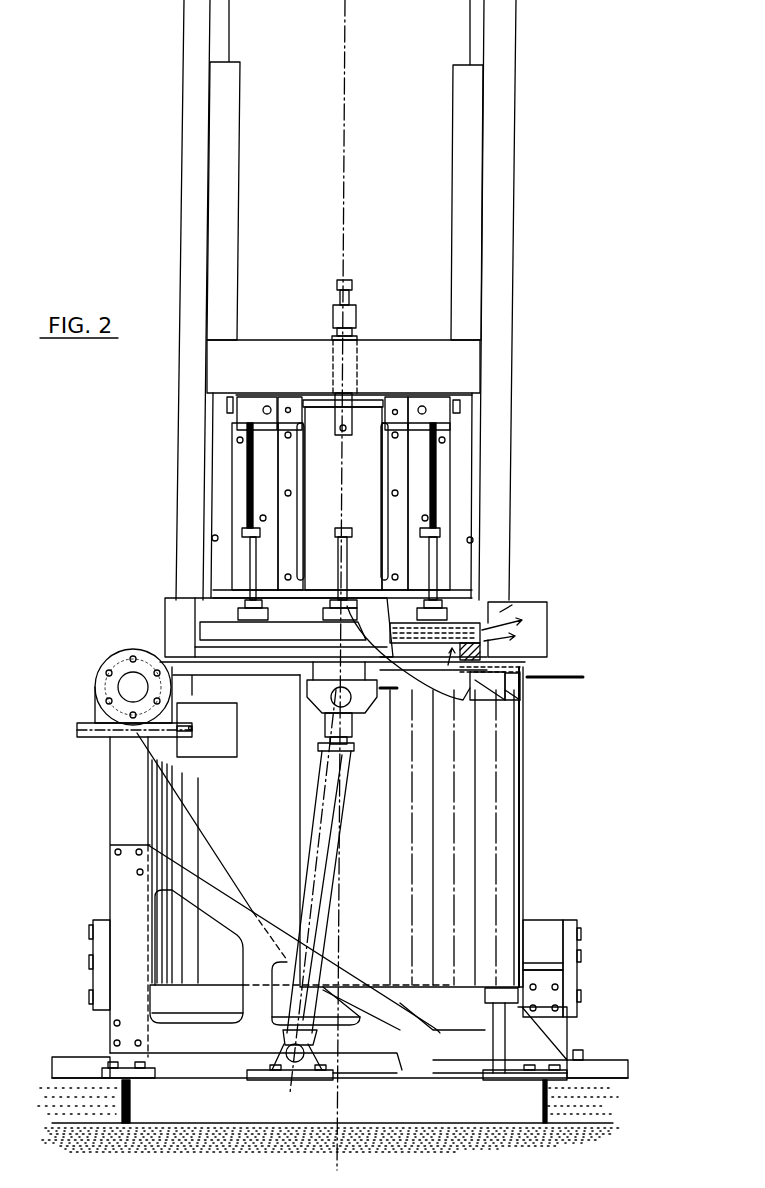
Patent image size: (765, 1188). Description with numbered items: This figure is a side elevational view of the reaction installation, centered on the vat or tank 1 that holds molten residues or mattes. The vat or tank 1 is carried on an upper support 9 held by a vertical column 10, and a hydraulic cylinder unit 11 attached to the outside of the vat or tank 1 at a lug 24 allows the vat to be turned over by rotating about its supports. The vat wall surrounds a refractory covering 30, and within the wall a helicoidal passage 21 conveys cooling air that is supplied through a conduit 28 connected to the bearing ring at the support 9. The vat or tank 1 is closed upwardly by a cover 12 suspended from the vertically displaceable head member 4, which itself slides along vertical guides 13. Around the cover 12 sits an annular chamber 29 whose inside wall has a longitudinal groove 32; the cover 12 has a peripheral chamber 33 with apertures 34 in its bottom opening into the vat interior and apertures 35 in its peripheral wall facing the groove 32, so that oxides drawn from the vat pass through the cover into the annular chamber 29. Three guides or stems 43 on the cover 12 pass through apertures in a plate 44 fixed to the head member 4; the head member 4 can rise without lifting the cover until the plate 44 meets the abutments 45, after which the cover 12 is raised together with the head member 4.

The vat or tank 1 is at (477, 780).
The head member 4 is at (423, 475).
The upper support 9 is at (113, 648).
The vertical column 10 is at (125, 812).
The hydraulic cylinder unit 11 is at (317, 823).
The cover 12 is at (230, 632).
The vertical guide 13 is at (498, 238).
The helicoidal passage 21 is at (523, 680).
The lug 24 is at (357, 700).
The conduit 28 is at (130, 690).
The annular chamber 29 is at (535, 615).
The refractory covering 30 is at (483, 687).
The longitudinal groove 32 is at (500, 622).
The peripheral chamber 33 is at (460, 637).
The aperture 34 is at (513, 678).
The aperture 35 is at (548, 639).
The guide or stem 43 is at (323, 587).
The plate 44 is at (250, 553).
The abutment 45 is at (342, 527).